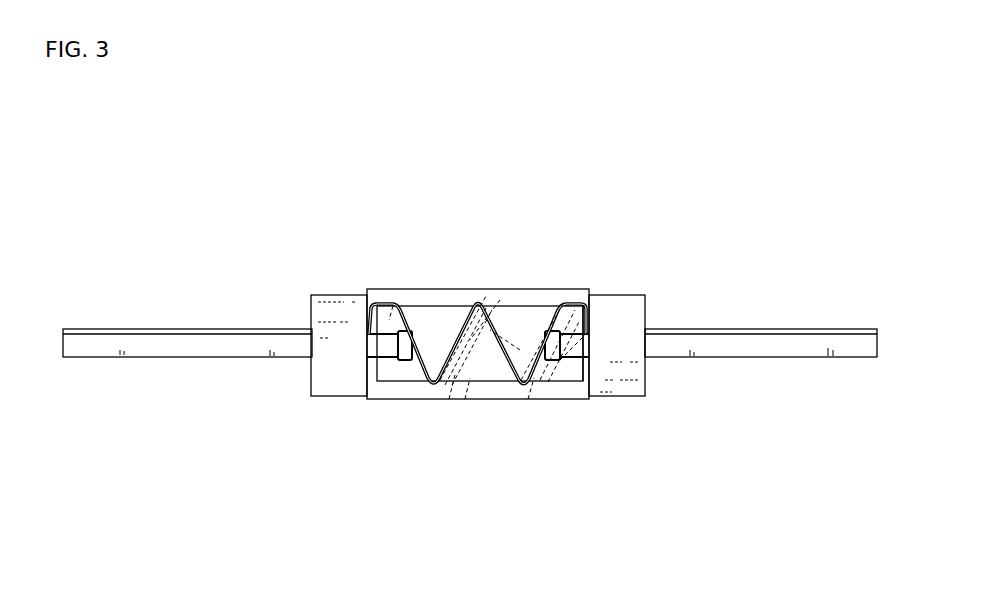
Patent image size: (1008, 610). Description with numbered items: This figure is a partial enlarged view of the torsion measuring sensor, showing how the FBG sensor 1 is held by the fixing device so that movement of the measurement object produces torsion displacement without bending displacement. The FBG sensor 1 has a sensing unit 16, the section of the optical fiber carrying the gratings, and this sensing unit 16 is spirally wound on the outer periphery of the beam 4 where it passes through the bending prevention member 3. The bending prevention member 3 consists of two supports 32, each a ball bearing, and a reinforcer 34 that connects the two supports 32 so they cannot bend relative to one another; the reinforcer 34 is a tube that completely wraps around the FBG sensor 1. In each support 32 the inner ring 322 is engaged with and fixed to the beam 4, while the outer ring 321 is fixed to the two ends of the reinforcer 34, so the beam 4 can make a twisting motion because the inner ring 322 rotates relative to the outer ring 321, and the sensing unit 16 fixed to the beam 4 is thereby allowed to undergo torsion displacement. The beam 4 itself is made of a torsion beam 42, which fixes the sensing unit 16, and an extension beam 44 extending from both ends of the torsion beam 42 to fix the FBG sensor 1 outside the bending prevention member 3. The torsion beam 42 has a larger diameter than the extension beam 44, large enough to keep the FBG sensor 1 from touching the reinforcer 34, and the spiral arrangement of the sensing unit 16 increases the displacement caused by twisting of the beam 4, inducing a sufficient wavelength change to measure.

The FBG sensor 1 is at (827, 328).
The bending prevention member 3 is at (483, 281).
The support 32 is at (342, 295).
The outer ring 321 is at (617, 295).
The inner ring 322 is at (589, 364).
The reinforcer 34 is at (457, 289).
The beam 4 is at (326, 452).
The torsion beam 42 is at (400, 399).
The extension beam 44 is at (247, 357).
The sensing unit 16 is at (503, 365).